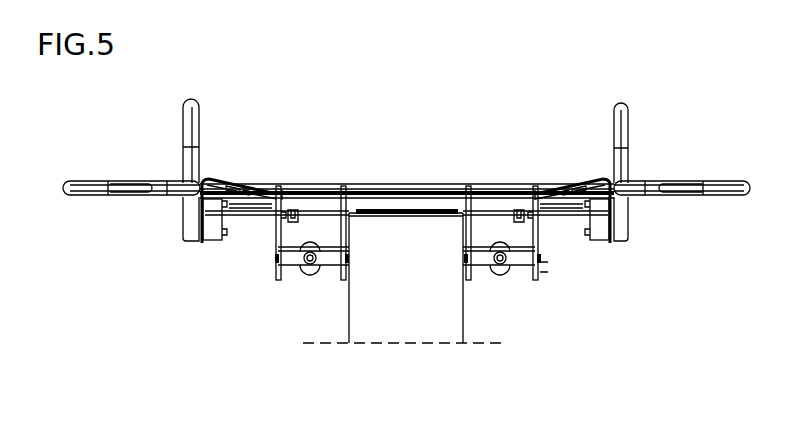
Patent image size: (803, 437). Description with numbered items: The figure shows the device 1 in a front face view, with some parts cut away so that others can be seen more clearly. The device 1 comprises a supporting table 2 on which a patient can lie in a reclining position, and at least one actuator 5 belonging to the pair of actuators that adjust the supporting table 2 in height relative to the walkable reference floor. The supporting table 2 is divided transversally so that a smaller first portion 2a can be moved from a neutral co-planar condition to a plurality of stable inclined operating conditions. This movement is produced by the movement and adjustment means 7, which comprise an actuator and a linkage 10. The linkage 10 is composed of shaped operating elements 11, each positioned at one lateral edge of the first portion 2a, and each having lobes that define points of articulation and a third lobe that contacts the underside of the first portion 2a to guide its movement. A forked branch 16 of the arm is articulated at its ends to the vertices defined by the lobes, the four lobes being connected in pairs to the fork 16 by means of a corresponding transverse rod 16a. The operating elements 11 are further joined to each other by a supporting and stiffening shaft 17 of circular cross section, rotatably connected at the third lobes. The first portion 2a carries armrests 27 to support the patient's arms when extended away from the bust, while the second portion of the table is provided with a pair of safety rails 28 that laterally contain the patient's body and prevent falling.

The device 1 is at (133, 144).
The supporting table 2 is at (523, 166).
The first portion 2a is at (372, 185).
The actuator 5 is at (392, 303).
The movement and adjustment means 7 is at (548, 267).
The linkage 10 is at (270, 277).
The operating element 11 is at (537, 238).
The forked branch 16 is at (323, 270).
The transverse rod 16a is at (290, 258).
The supporting and stiffening shaft 17 is at (407, 211).
The armrests 27 is at (731, 183).
The safety rails 28 is at (197, 107).